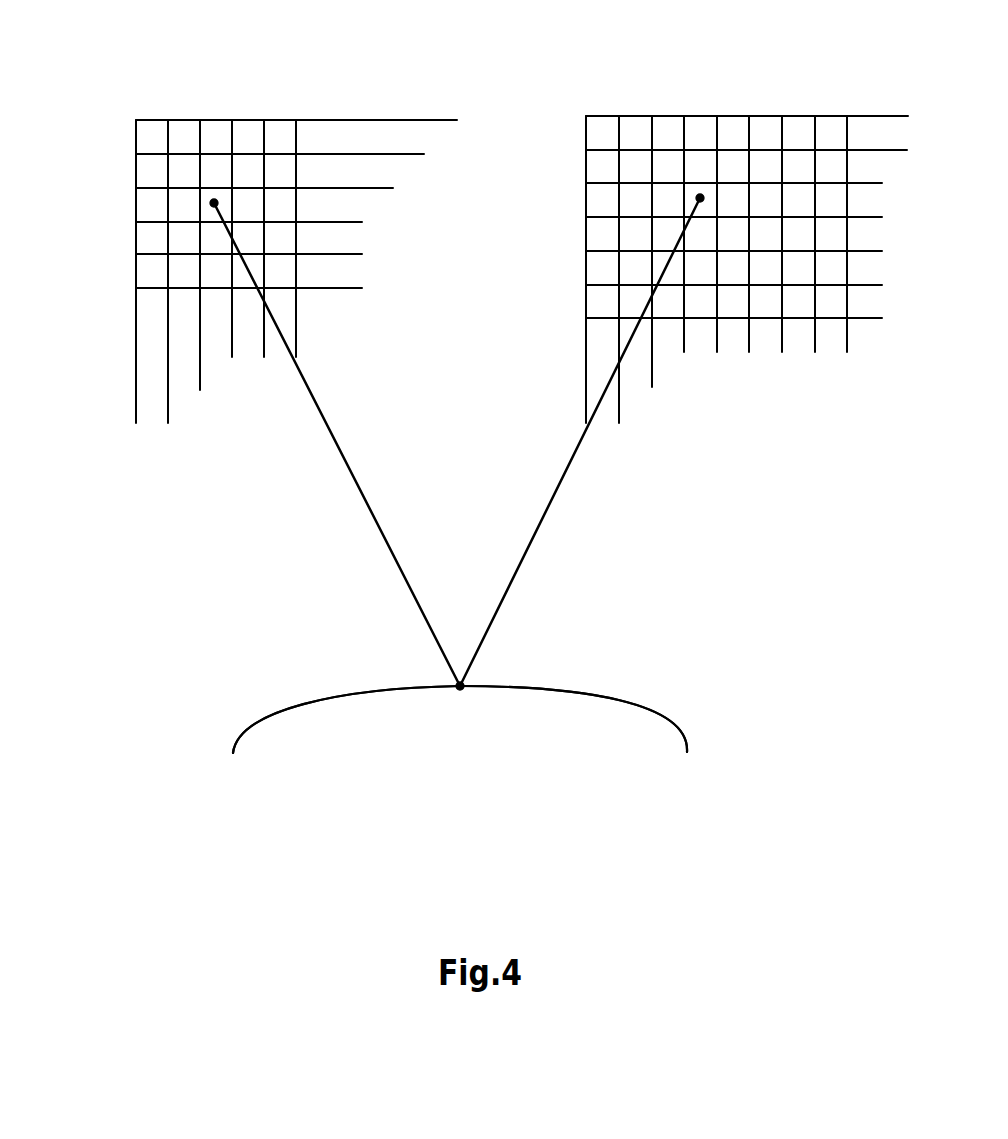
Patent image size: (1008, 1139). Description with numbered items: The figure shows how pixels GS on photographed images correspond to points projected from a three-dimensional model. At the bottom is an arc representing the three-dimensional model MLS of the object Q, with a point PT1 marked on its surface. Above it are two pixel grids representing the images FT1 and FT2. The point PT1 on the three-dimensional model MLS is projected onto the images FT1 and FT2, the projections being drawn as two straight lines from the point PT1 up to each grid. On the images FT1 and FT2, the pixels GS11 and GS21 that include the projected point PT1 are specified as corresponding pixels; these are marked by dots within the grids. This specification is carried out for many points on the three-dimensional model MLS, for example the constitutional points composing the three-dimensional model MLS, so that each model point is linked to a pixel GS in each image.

The image FT1 is at (312, 37).
The image FT2 is at (765, 33).
The pixel GS is at (279, 132).
The pixel GS11 is at (203, 213).
The pixel GS21 is at (687, 211).
The point PT1 is at (465, 680).
The three-dimensional model MLS is at (650, 707).
The object Q is at (481, 719).